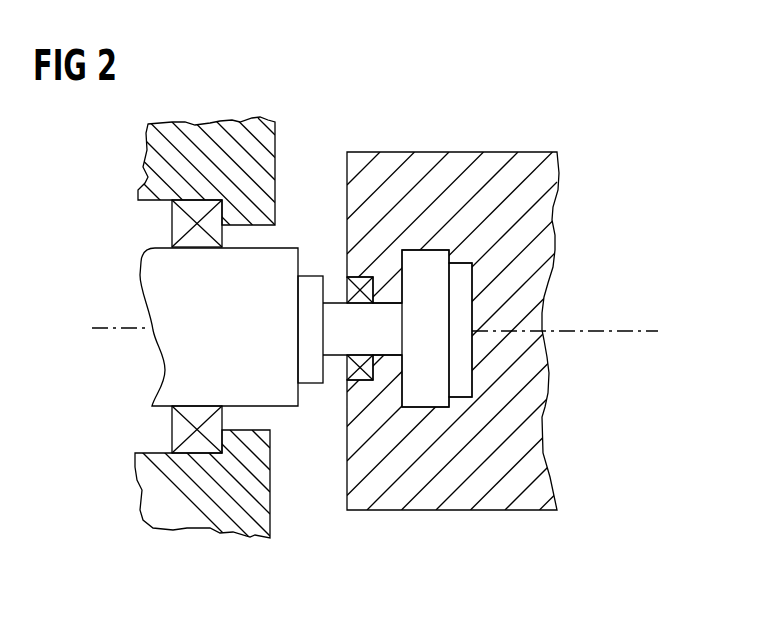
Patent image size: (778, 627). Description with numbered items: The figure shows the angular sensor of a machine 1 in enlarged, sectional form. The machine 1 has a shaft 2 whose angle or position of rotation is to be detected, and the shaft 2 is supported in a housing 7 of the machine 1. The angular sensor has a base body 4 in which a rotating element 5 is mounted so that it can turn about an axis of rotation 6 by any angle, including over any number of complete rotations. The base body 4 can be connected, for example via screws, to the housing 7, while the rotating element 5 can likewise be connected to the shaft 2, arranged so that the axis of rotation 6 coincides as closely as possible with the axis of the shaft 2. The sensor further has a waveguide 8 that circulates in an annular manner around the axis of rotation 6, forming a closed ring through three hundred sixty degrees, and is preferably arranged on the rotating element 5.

The machine 1 is at (289, 137).
The shaft 2 is at (284, 246).
The base body 4 is at (452, 511).
The rotating element 5 is at (423, 249).
The axis of rotation 6 is at (617, 332).
The housing 7 is at (222, 530).
The waveguide 8 is at (463, 262).